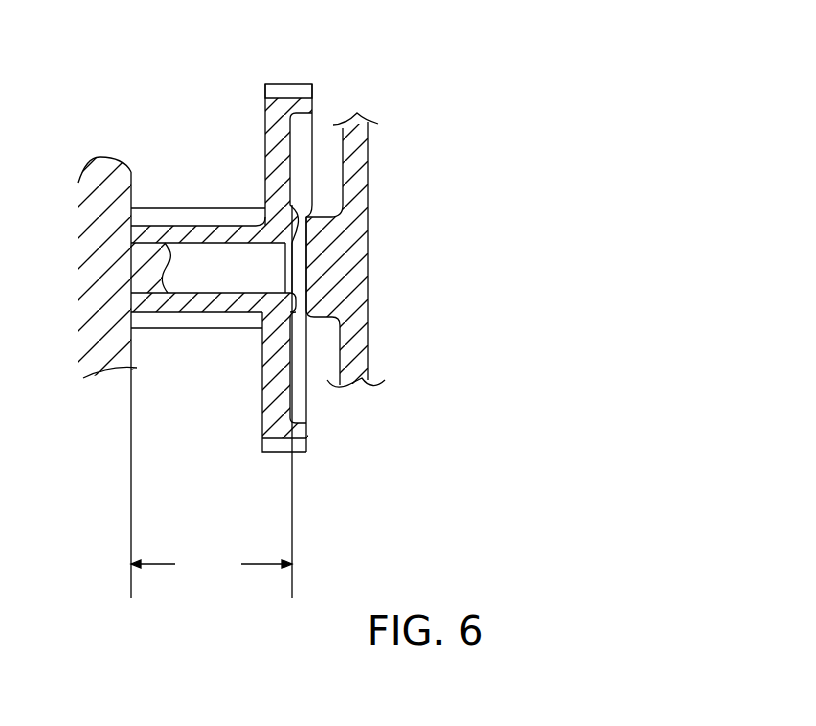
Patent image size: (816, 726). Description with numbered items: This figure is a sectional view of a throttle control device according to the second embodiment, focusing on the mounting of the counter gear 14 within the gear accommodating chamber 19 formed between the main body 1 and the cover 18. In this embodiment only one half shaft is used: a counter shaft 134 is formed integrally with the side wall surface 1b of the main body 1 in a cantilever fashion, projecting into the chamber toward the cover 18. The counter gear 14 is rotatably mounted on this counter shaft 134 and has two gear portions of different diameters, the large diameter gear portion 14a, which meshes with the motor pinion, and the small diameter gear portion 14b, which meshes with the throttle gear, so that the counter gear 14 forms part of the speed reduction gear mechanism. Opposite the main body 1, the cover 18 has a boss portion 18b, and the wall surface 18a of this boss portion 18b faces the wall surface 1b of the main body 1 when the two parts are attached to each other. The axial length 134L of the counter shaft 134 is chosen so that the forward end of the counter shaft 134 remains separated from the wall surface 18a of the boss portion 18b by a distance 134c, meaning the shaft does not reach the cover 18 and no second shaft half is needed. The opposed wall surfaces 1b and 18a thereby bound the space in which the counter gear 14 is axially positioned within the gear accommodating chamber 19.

The main body 1 is at (84, 377).
The side wall surface 1b is at (133, 197).
The counter gear 14 is at (264, 110).
The large diameter gear portion 14a is at (290, 90).
The small diameter gear portion 14b is at (246, 220).
The counter shaft 134 is at (189, 246).
The distance 134c is at (300, 257).
The axial length 134L is at (211, 401).
The cover 18 is at (367, 353).
The wall surface 18a is at (306, 215).
The boss portion 18b is at (320, 233).
The gear accommodating chamber 19 is at (190, 355).